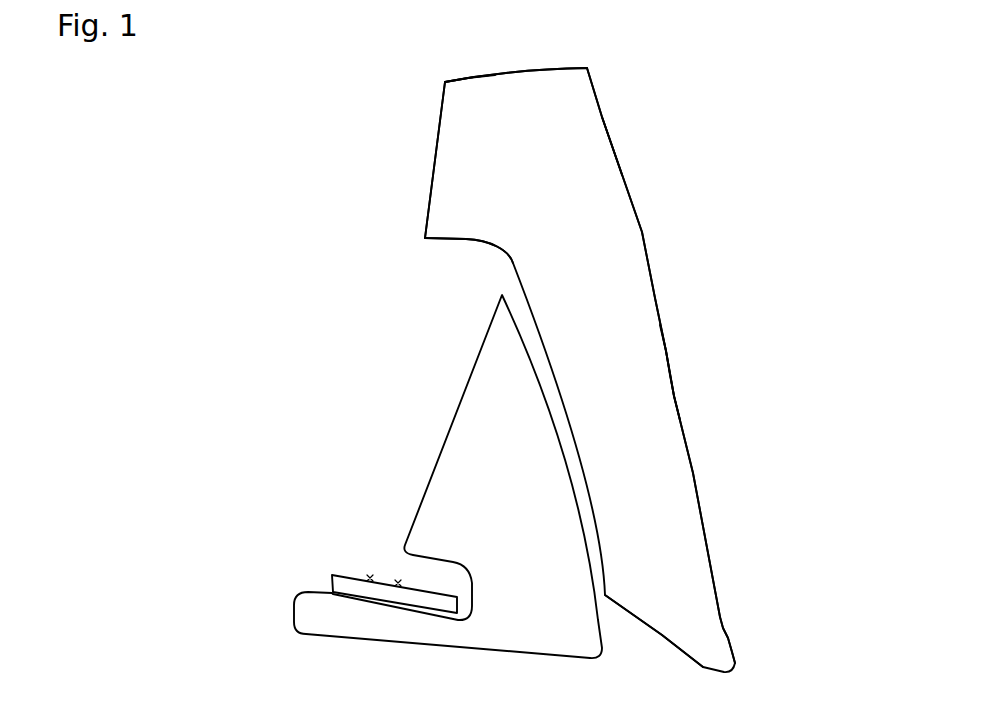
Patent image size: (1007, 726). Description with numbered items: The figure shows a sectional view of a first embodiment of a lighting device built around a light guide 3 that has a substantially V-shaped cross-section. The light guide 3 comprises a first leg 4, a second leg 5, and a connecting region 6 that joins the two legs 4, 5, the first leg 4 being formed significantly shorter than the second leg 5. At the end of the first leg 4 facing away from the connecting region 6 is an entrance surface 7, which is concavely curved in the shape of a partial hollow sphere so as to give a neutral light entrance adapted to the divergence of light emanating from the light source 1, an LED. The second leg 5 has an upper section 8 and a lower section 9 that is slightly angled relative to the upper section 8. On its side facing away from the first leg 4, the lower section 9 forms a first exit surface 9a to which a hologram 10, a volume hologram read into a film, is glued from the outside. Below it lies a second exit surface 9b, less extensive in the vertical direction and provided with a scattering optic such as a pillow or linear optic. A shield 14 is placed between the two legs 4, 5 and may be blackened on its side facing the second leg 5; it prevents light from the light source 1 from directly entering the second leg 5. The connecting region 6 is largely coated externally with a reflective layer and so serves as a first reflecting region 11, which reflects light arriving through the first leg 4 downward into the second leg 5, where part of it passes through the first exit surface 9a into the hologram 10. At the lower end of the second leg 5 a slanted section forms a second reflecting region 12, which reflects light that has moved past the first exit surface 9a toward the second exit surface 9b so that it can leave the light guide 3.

The light source 1 is at (385, 577).
The light guide 3 is at (353, 175).
The first leg 4 is at (442, 125).
The second leg 5 is at (642, 232).
The connecting region 6 is at (462, 80).
The entrance surface 7 is at (466, 239).
The upper section 8 is at (602, 117).
The lower section 9 is at (693, 473).
The first exit surface 9a is at (666, 351).
The second exit surface 9b is at (728, 638).
The hologram 10 is at (674, 396).
The first reflecting region 11 is at (515, 72).
The second reflecting region 12 is at (662, 635).
The shield 14 is at (485, 530).